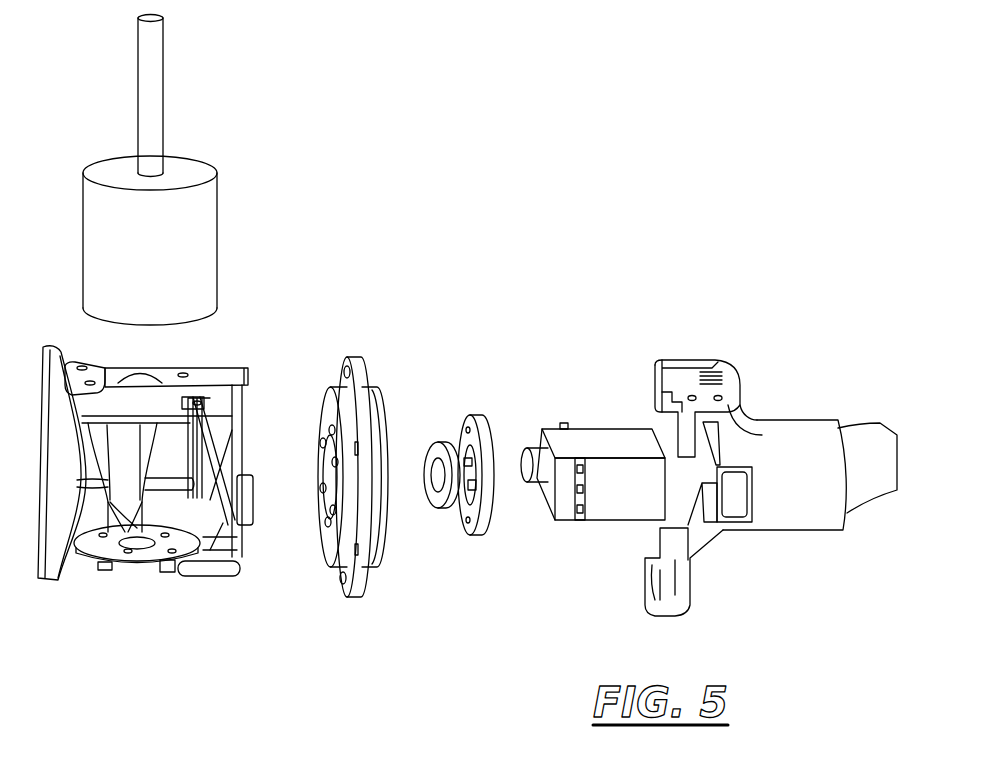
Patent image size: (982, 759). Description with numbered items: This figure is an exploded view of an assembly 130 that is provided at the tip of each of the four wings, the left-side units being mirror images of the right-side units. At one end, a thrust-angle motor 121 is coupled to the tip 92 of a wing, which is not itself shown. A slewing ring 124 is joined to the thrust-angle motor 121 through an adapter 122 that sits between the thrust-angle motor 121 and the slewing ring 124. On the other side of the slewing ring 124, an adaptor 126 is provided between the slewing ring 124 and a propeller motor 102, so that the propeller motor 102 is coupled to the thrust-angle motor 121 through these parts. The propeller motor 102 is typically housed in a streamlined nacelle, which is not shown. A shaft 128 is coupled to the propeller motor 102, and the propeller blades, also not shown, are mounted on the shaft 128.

The shaft 128 is at (152, 113).
The propeller motor 102 is at (194, 248).
The adaptor 126 is at (148, 553).
The slewing ring 124 is at (350, 350).
The adapter 122 is at (520, 543).
The thrust-angle motor 121 is at (608, 450).
The tip 92 is at (862, 450).
The assembly 130 is at (898, 618).